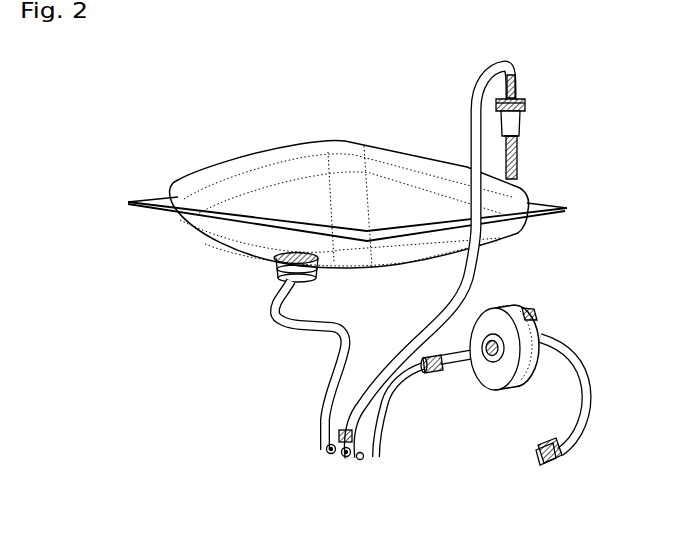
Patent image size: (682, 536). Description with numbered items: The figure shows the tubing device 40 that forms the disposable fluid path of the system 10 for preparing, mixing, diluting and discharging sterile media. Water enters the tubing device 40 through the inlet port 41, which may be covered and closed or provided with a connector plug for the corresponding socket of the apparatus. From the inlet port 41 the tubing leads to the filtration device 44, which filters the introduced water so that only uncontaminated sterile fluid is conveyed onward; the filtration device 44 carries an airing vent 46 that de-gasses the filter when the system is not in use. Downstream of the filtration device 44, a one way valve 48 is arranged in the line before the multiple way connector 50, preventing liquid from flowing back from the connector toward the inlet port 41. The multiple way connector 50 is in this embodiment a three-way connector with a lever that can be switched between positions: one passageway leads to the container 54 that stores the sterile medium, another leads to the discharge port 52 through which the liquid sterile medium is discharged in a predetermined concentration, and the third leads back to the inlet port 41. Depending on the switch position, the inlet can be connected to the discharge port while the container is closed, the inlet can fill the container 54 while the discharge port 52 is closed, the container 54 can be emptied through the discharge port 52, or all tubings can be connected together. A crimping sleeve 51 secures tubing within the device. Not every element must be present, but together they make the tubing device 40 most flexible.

The system 10 is at (645, 0).
The tubing device 40 is at (236, 109).
The inlet port of tubing device 41 is at (561, 462).
The filtration device 44 is at (537, 334).
The airing vent 46 is at (529, 309).
The one way valve 48 is at (437, 374).
The multiple way connector 50 is at (335, 457).
The crimping sleeve 51 is at (520, 150).
The discharge port of tubing device 52 is at (537, 158).
The container 54 is at (360, 163).